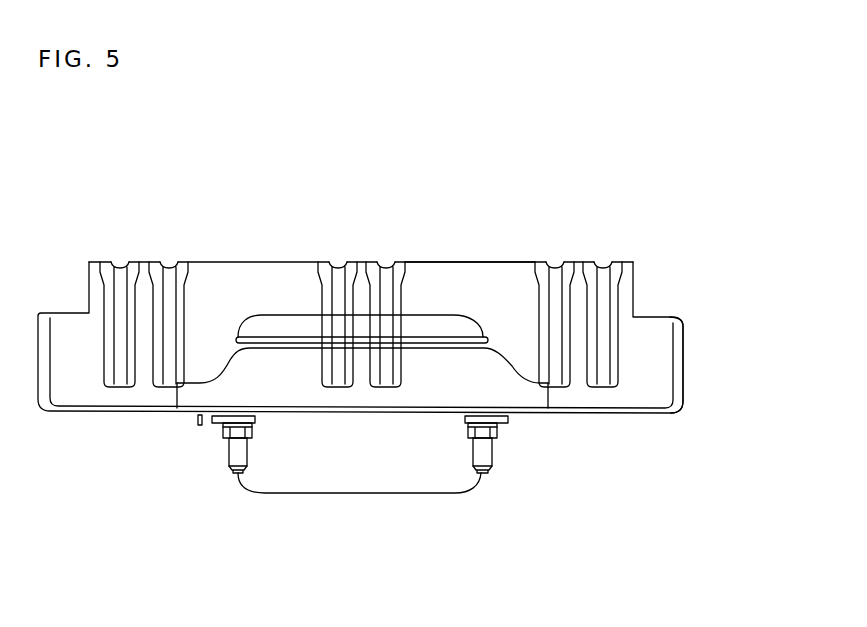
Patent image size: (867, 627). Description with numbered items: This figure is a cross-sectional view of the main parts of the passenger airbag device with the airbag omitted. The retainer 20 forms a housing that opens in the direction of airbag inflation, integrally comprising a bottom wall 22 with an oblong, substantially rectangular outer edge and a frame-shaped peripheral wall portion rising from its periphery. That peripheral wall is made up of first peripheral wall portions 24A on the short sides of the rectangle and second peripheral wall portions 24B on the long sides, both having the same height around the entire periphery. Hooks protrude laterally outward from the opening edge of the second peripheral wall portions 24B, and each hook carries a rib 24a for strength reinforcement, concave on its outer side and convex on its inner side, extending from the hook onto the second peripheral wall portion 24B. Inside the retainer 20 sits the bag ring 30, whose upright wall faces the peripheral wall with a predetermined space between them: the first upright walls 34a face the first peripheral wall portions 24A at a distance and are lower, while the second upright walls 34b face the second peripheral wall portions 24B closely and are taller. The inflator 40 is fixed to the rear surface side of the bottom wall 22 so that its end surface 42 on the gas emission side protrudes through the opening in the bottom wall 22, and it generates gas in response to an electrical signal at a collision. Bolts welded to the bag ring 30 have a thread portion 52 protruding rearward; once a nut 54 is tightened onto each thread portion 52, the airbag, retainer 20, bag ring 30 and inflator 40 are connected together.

The retainer 20 is at (79, 252).
The bottom wall 22 is at (90, 413).
The rib 24a is at (121, 262).
The first peripheral wall portion 24A is at (684, 347).
The second peripheral wall portion 24B is at (490, 262).
The bag ring 30 is at (222, 340).
The first upright wall 34a is at (549, 397).
The second upright wall 34b is at (290, 337).
The end surface 42 is at (437, 315).
The inflator 40 is at (475, 499).
The thread portion 52 is at (228, 465).
The nut 54 is at (222, 432).